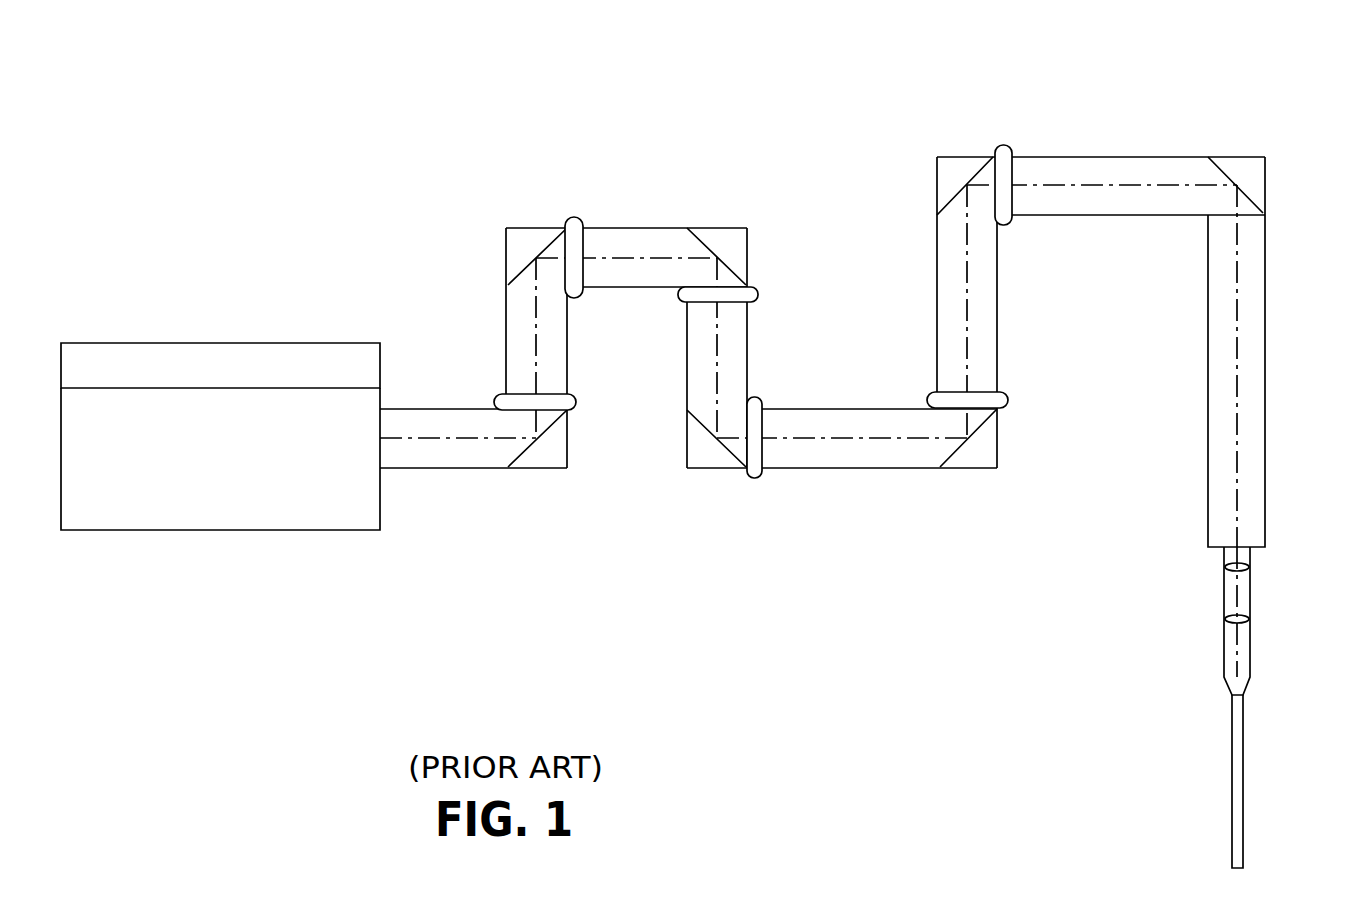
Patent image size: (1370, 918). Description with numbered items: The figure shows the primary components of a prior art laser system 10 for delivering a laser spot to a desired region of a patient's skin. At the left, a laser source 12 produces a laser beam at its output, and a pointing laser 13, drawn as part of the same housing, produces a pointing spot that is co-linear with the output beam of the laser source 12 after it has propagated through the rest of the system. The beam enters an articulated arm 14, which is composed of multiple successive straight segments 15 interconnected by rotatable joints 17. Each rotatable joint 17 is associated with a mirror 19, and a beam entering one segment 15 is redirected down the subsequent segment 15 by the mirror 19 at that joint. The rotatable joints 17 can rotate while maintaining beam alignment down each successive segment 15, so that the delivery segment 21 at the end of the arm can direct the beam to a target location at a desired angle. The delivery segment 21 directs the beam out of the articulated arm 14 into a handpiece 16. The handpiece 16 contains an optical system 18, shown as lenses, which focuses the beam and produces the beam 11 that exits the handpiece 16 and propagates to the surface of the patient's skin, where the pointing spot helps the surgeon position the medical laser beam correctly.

The laser system 10 is at (645, 598).
The beam 11 is at (1243, 783).
The laser source 12 is at (203, 472).
The pointing laser 13 is at (203, 382).
The articulated arm 14 is at (795, 135).
The straight segment 15 is at (506, 328).
The handpiece 16 is at (1252, 640).
The rotatable joint 17 is at (577, 400).
The optical system 18 is at (1228, 623).
The mirror 19 is at (548, 250).
The delivery segment 21 is at (1267, 367).